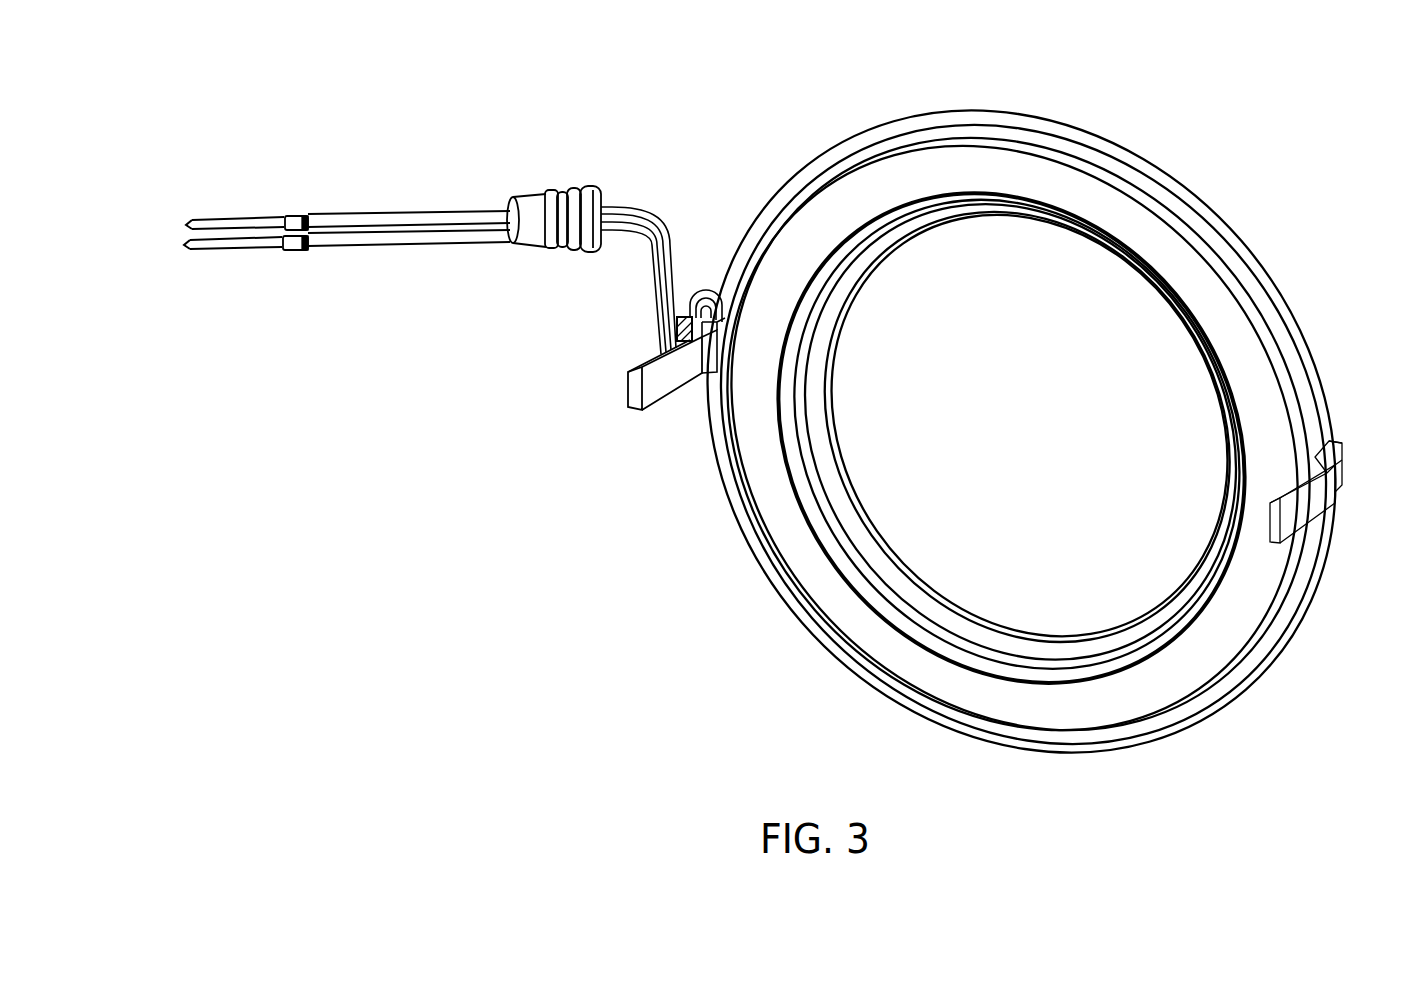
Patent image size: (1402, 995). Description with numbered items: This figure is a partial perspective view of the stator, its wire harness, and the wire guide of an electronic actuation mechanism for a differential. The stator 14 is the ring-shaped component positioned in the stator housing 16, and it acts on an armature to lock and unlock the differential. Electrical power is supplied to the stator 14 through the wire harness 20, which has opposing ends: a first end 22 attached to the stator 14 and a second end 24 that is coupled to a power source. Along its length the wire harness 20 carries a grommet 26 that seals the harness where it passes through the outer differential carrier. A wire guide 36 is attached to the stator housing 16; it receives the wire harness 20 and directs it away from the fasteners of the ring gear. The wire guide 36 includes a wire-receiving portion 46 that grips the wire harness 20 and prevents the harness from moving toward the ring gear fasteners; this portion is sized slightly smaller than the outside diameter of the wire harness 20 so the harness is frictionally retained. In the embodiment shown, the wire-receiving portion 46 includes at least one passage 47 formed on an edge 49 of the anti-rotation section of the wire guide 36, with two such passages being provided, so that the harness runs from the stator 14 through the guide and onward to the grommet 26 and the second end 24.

The stator 14 is at (855, 190).
The stator housing 16 is at (1015, 128).
The wire harness 20 is at (410, 212).
The first end 22 is at (710, 288).
The second end 24 is at (280, 192).
The grommet 26 is at (560, 172).
The wire guide 36 is at (628, 373).
The wire-receiving portion 46 is at (682, 314).
The passage 47 is at (690, 370).
The edge 49 is at (643, 361).